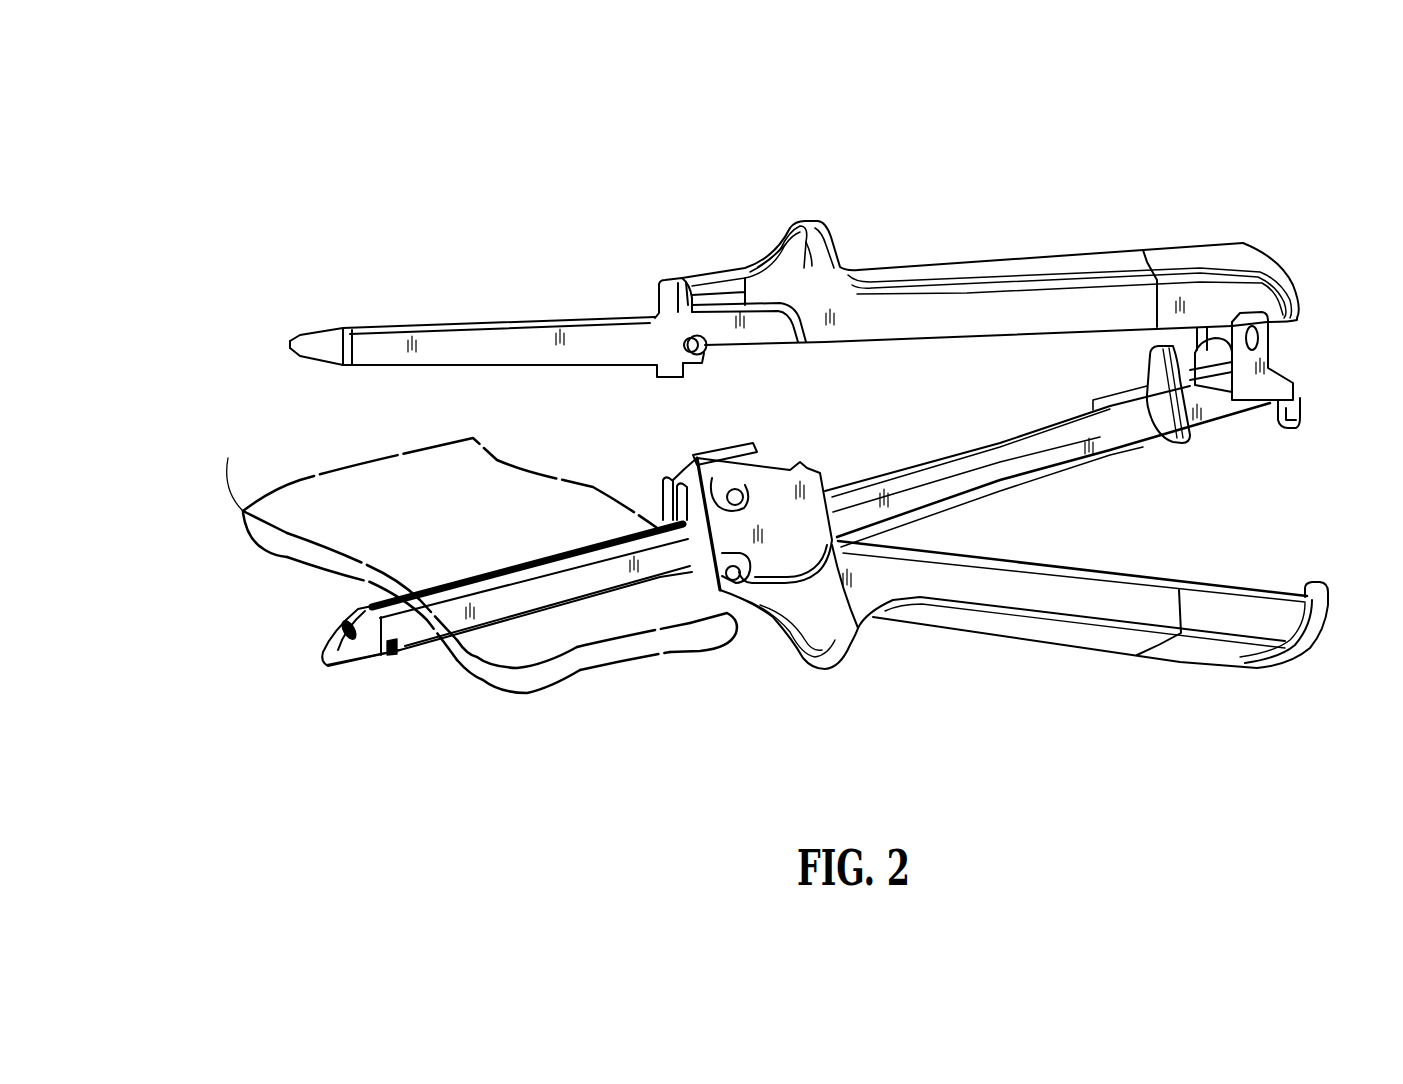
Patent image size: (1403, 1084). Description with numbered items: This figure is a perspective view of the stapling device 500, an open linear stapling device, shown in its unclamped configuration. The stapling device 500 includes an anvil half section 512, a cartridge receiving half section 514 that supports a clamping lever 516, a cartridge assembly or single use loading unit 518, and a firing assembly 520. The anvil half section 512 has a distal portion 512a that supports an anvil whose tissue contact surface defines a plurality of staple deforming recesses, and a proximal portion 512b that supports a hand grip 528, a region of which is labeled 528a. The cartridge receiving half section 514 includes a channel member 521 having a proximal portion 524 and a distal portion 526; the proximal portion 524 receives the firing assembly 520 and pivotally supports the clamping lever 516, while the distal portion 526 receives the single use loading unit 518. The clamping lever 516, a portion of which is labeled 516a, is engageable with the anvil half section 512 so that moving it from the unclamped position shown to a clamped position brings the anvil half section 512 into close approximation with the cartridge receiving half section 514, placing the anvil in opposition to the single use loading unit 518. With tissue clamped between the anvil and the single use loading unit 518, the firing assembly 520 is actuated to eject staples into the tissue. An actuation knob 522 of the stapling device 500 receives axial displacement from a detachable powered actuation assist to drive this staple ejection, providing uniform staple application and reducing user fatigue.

The stapling device 500 is at (1264, 161).
The anvil half section 512 is at (676, 264).
The distal portion 512a is at (417, 325).
The proximal portion 512b is at (884, 273).
The hand grip 528 is at (1117, 262).
The thumb rest / hump 528a is at (803, 220).
The cartridge receiving half section 514 is at (852, 468).
The clamping lever 516 is at (1093, 637).
The handle neck 516a is at (820, 668).
The single use loading unit 518 is at (370, 642).
The firing assembly 520 is at (1217, 392).
The channel member 521 is at (940, 463).
The actuation knob 522 is at (1170, 437).
The proximal portion 524 is at (1078, 453).
The distal portion 526 is at (397, 648).